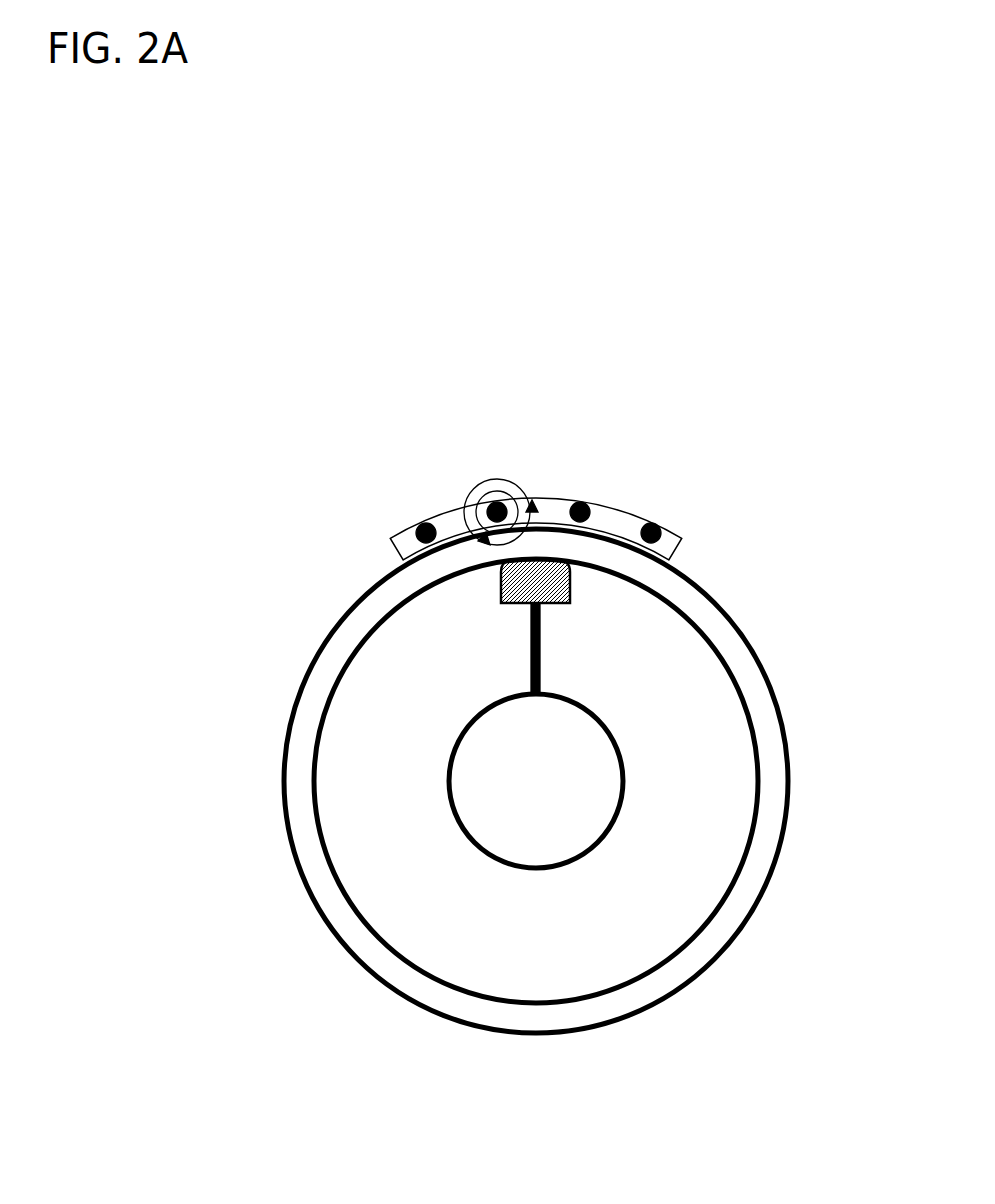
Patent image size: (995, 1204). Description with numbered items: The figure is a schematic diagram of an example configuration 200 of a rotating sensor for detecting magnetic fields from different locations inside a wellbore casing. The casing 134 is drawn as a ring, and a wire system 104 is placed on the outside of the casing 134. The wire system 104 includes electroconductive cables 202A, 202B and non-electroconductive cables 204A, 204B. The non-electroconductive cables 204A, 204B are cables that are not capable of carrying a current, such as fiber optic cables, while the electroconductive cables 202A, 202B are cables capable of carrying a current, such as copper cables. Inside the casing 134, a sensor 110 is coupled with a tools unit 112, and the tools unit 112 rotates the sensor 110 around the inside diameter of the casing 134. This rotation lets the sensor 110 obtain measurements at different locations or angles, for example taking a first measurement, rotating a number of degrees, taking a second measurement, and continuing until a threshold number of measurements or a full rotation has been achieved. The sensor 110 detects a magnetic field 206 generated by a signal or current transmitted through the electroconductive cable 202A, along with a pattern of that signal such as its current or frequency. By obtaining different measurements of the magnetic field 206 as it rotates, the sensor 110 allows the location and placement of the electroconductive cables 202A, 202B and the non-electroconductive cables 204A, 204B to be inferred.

The configuration 200 is at (267, 388).
The casing 134 is at (778, 700).
The wire system 104 is at (678, 553).
The sensor 110 is at (570, 595).
The tools unit 112 is at (622, 812).
The non-electroconductive cable 204A is at (419, 524).
The electroconductive cable 202A is at (505, 506).
The electroconductive cable 202B is at (587, 508).
The non-electroconductive cable 204B is at (660, 531).
The magnetic field 206 is at (480, 485).